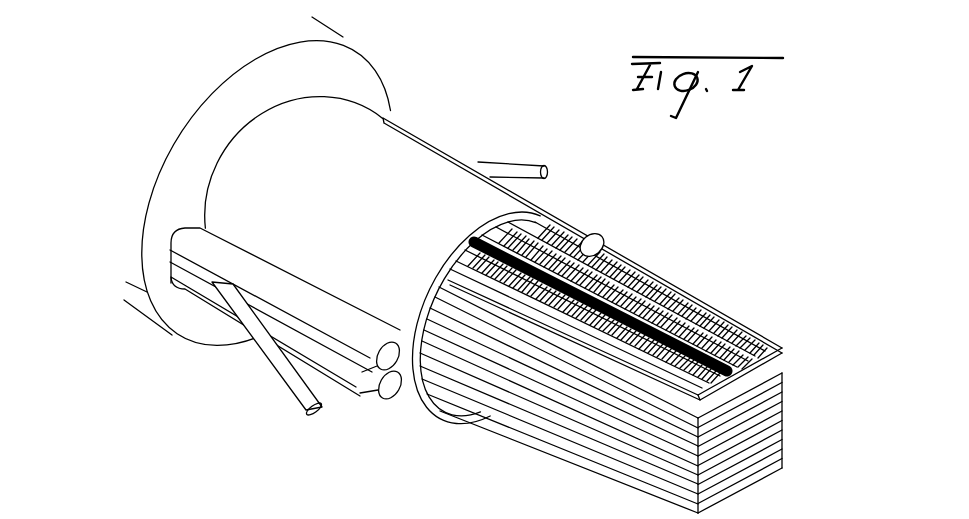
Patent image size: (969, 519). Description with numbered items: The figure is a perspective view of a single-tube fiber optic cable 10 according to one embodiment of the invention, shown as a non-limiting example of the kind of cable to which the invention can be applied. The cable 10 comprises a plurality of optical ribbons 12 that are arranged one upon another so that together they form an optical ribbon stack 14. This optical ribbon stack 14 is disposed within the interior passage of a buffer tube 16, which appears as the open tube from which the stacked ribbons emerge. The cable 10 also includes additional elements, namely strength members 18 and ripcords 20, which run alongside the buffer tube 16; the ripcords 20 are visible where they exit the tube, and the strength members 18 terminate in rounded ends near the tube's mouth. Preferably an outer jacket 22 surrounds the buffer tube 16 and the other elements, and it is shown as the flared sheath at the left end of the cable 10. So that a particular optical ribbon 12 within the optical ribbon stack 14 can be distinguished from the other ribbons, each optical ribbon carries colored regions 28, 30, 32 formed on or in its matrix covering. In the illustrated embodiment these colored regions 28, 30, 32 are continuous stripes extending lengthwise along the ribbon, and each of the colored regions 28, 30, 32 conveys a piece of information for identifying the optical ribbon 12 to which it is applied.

The fiber optic cable 10 is at (459, 121).
The optical ribbon 12 is at (753, 340).
The optical ribbon stack 14 is at (797, 317).
The buffer tube 16 is at (482, 420).
The strength member 18 is at (597, 246).
The ripcord 20 is at (526, 166).
The outer jacket 22 is at (371, 74).
The colored region 28 is at (700, 318).
The colored region 30 is at (648, 315).
The colored region 32 is at (598, 315).